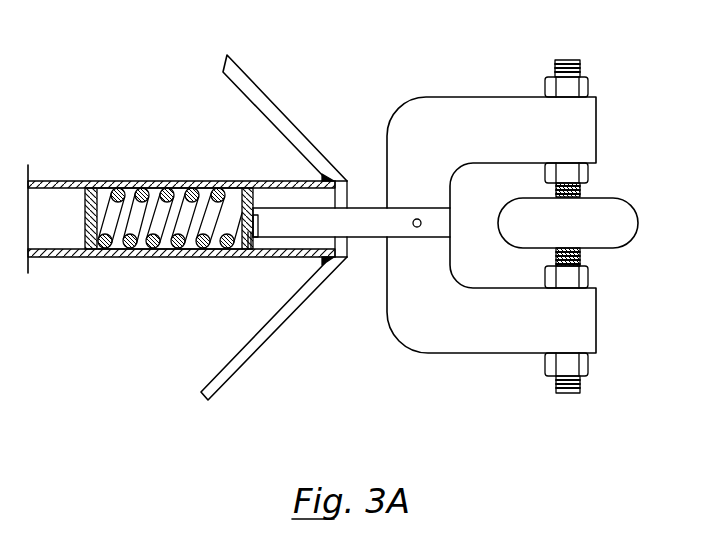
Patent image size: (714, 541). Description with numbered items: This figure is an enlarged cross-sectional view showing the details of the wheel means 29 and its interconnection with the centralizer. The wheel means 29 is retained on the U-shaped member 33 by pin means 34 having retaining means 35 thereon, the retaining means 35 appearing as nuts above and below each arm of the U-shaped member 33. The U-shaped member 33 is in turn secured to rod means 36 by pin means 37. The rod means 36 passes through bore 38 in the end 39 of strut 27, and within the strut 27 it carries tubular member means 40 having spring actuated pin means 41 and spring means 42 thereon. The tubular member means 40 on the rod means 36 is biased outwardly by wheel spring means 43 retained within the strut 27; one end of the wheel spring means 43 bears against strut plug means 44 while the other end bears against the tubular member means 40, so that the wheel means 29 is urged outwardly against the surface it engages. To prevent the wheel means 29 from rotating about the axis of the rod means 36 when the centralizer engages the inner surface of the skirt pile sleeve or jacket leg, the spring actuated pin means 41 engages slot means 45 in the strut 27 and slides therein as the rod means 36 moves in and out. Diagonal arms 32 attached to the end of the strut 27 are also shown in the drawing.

The strut 27 is at (56, 180).
The wheel means 29 is at (633, 222).
The support arms 32 is at (253, 93).
The U-shaped member 33 is at (435, 118).
The pin means 34 is at (578, 60).
The retaining means 35 is at (583, 90).
The rod means 36 is at (373, 217).
The pin means 37 is at (417, 219).
The bore 38 is at (348, 260).
The end 39 is at (343, 262).
The tubular member means 40 is at (222, 247).
The spring actuated pin means 41 is at (252, 256).
The spring means 42 is at (247, 186).
The wheel spring means 43 is at (128, 250).
The strut plug means 44 is at (92, 181).
The slot means 45 is at (200, 256).